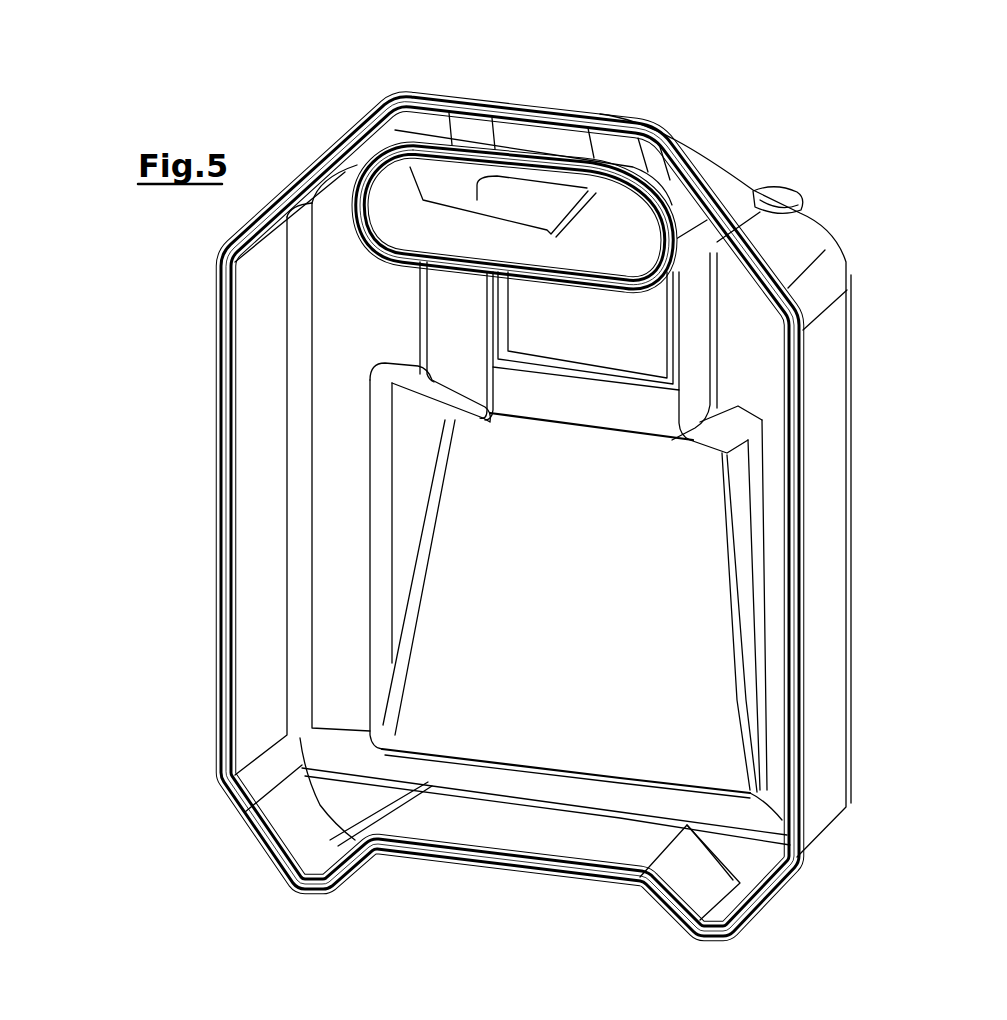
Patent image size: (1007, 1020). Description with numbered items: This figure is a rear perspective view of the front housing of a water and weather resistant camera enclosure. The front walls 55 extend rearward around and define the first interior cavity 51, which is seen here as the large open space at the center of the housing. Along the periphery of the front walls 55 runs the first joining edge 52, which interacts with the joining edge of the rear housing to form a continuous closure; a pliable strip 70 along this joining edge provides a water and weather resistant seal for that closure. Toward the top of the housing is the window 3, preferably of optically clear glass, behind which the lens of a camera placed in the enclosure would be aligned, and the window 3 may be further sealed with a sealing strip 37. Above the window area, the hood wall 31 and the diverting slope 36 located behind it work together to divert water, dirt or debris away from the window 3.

The window 3 is at (633, 332).
The hood wall 31 is at (500, 170).
The diverting slope 36 is at (592, 202).
The sealing strip 37 is at (624, 380).
The first interior cavity 51 is at (645, 697).
The first joining edge 52 is at (725, 203).
The front walls 55 is at (822, 659).
The pliable strip 70 is at (215, 425).